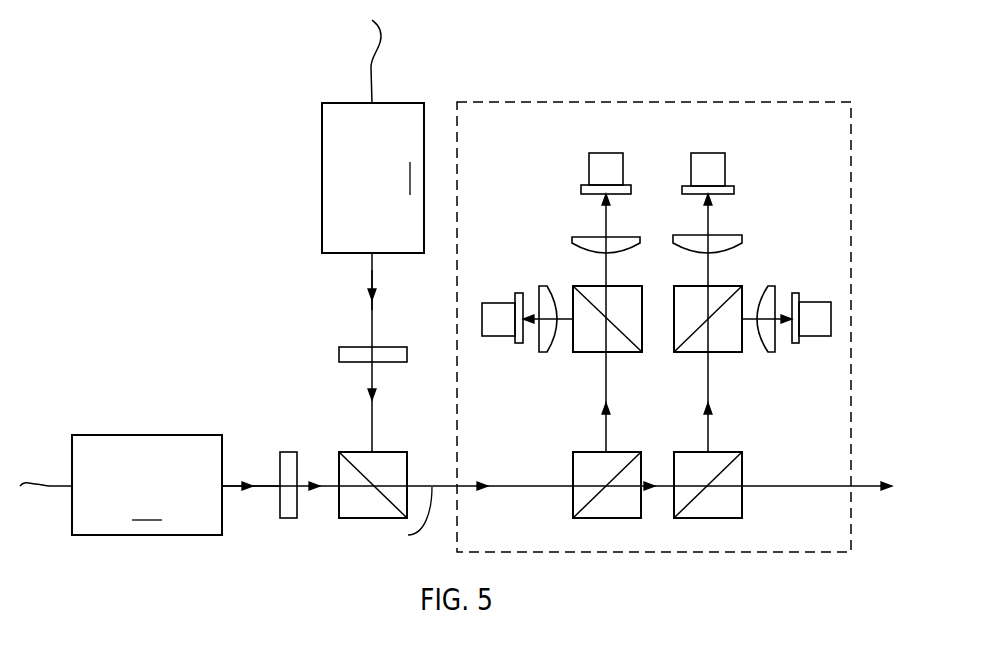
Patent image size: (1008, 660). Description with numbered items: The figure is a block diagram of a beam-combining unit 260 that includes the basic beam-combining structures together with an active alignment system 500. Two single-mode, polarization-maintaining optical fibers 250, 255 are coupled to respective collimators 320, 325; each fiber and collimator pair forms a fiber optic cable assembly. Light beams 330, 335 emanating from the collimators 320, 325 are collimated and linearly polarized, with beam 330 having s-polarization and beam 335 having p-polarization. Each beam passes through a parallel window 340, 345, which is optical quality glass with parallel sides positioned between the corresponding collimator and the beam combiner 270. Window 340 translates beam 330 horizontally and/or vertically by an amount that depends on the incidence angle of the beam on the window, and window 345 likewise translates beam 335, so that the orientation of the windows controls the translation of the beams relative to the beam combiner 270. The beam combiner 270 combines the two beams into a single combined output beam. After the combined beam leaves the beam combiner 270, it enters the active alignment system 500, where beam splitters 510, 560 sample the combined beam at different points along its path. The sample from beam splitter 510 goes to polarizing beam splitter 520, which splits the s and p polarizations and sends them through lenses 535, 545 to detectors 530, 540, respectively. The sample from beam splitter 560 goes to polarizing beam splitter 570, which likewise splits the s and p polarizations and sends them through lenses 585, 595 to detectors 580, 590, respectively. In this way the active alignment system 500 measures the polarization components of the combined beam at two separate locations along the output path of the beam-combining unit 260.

The optical fiber 250 is at (370, 70).
The optical fiber 255 is at (33, 478).
The beam-combining unit 260 is at (168, 199).
The beam combiner 270 is at (393, 452).
The collimator 320 is at (373, 178).
The collimator 325 is at (147, 485).
The light beam 330 is at (372, 285).
The light beam 335 is at (236, 480).
The parallel window 340 is at (407, 355).
The parallel window 345 is at (288, 518).
The active alignment system 500 is at (758, 102).
The beam splitter 510 is at (590, 518).
The polarizing beam splitter 520 is at (590, 352).
The detector 530 is at (498, 337).
The lens 535 is at (542, 284).
The detector 540 is at (588, 170).
The lens 545 is at (571, 240).
The beam splitter 560 is at (692, 518).
The polarizing beam splitter 570 is at (693, 352).
The detector 580 is at (805, 336).
The lens 585 is at (770, 285).
The detector 590 is at (727, 168).
The lens 595 is at (742, 237).